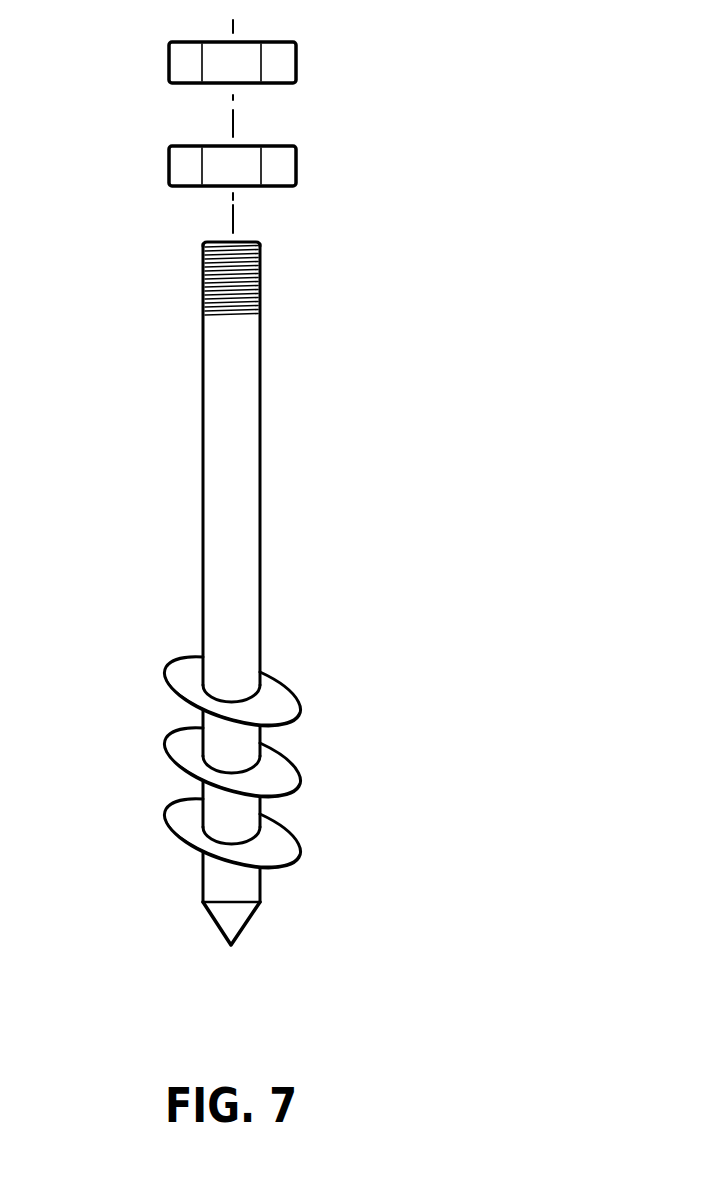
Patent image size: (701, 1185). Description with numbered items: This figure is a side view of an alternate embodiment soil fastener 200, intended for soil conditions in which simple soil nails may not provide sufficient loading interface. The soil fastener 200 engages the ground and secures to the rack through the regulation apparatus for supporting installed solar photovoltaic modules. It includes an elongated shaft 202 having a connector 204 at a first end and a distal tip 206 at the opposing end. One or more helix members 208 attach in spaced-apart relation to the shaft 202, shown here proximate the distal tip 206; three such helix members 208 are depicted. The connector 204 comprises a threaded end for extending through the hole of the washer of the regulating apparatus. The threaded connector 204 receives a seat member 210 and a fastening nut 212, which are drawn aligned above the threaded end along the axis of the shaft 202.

The soil fastener 200 is at (282, 490).
The elongated shaft 202 is at (217, 572).
The connector 204 is at (263, 290).
The distal tip 206 is at (231, 920).
The helix members 208 is at (282, 693).
The seat member 210 is at (297, 172).
The fastening nut 212 is at (297, 70).